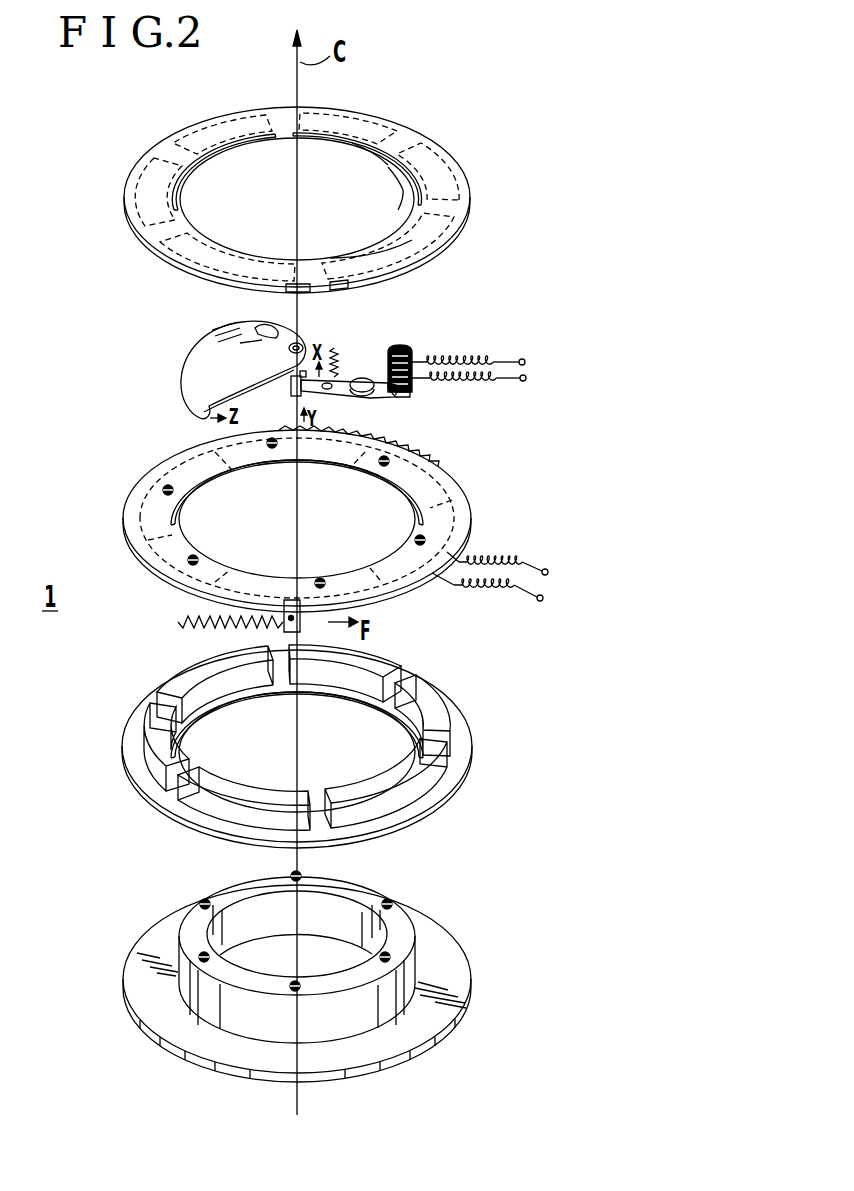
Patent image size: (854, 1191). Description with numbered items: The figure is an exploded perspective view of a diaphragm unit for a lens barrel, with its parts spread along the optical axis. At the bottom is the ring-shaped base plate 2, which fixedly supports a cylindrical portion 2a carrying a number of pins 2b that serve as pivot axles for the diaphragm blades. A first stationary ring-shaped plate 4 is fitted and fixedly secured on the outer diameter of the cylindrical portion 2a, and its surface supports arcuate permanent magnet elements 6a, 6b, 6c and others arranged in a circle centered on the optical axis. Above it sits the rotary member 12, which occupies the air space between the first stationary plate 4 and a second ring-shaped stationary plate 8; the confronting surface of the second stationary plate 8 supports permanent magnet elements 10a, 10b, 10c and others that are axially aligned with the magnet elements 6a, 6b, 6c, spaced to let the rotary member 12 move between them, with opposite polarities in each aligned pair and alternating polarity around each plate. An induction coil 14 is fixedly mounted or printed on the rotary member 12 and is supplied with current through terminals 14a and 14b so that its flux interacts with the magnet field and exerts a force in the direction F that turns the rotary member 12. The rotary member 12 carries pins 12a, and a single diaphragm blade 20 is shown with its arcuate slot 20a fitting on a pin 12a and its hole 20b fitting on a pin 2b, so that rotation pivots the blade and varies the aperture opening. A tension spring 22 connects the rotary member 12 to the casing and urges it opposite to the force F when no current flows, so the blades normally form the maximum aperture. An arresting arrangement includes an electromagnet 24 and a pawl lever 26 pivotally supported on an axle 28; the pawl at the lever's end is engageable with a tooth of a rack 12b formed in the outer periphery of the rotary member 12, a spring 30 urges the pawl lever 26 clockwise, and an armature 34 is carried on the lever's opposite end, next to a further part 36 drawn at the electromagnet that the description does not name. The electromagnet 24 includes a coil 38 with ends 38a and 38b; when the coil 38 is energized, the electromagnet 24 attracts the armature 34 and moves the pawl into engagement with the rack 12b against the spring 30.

The base plate 2 is at (300, 966).
The cylindrical portion 2a is at (388, 1012).
The pins 2b is at (302, 875).
The first stationary ring-shaped plate 4 is at (312, 743).
The permanent magnet element 6a is at (378, 664).
The permanent magnet element 6b is at (432, 705).
The permanent magnet element 6c is at (410, 795).
The second ring-shaped stationary plate 8 is at (462, 196).
The permanent magnet element 10a is at (378, 166).
The permanent magnet element 10b is at (400, 188).
The permanent magnet element 10c is at (412, 241).
The rotary member 12 is at (309, 518).
The pins 12a is at (272, 450).
The rack 12b is at (392, 443).
The induction coil 14 is at (410, 478).
The terminal 14a is at (548, 572).
The terminal 14b is at (542, 601).
The diaphragm blade 20 is at (244, 354).
The arcuate slot 20a is at (262, 330).
The hole 20b is at (302, 343).
The tension spring 22 is at (178, 628).
The electromagnet 24 is at (400, 350).
The pawl lever 26 is at (342, 383).
The axle 28 is at (368, 392).
The spring 30 is at (342, 354).
The armature 34 is at (412, 386).
The core 36 is at (408, 394).
The coil 38 is at (428, 360).
The coil end 38a is at (520, 359).
The coil end 38b is at (526, 379).